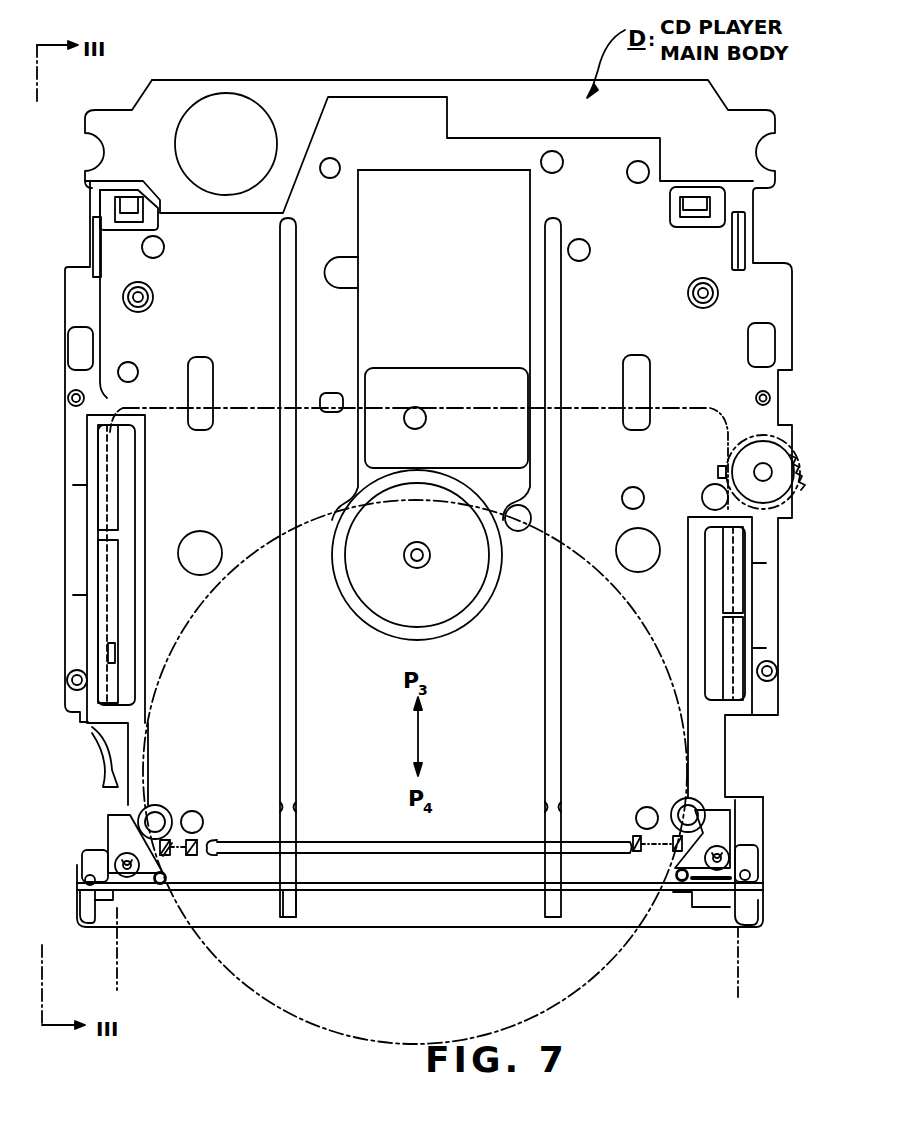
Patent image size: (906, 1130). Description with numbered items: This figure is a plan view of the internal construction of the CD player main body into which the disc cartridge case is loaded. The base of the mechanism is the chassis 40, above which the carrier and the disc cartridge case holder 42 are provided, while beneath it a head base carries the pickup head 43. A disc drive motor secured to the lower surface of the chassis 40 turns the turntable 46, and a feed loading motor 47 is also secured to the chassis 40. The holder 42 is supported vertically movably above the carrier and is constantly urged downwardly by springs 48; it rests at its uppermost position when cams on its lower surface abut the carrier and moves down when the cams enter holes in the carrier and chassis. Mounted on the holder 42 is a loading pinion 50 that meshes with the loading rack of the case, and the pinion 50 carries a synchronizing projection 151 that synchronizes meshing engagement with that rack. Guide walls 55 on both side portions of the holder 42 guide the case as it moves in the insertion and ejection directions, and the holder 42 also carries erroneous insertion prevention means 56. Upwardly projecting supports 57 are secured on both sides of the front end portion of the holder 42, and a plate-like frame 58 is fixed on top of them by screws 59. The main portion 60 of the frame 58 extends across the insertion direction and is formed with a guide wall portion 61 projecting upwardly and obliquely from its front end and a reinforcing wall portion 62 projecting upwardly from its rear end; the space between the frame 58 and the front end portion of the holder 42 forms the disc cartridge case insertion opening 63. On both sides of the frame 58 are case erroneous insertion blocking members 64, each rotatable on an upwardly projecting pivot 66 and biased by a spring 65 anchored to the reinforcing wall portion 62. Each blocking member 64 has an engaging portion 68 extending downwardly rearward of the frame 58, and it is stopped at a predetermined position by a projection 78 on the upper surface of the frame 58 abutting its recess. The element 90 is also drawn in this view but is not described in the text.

The chassis 40 is at (725, 100).
The disc cartridge case holder 42 is at (798, 282).
The pickup head 43 is at (436, 368).
The turntable 46 is at (470, 498).
The feed loading motor 47 is at (212, 108).
The springs 48 is at (68, 398).
The loading pinion 50 is at (792, 445).
The guide walls 55 is at (100, 548).
The erroneous insertion prevention means 56 is at (105, 840).
The supports 57 is at (80, 912).
The frame 58 is at (517, 870).
The screws 59 is at (82, 864).
The main portion 60 is at (417, 870).
The guide wall portion 61 is at (460, 893).
The reinforcing wall portion 62 is at (485, 840).
The disc cartridge case insertion opening 63 is at (343, 893).
The case erroneous insertion blocking members 64 is at (128, 877).
The springs 65 is at (187, 852).
The pivot 66 is at (126, 877).
The engaging portion 68 is at (140, 820).
The projection 78 is at (162, 880).
The tab 90 is at (118, 652).
The synchronizing projection 151 is at (722, 466).